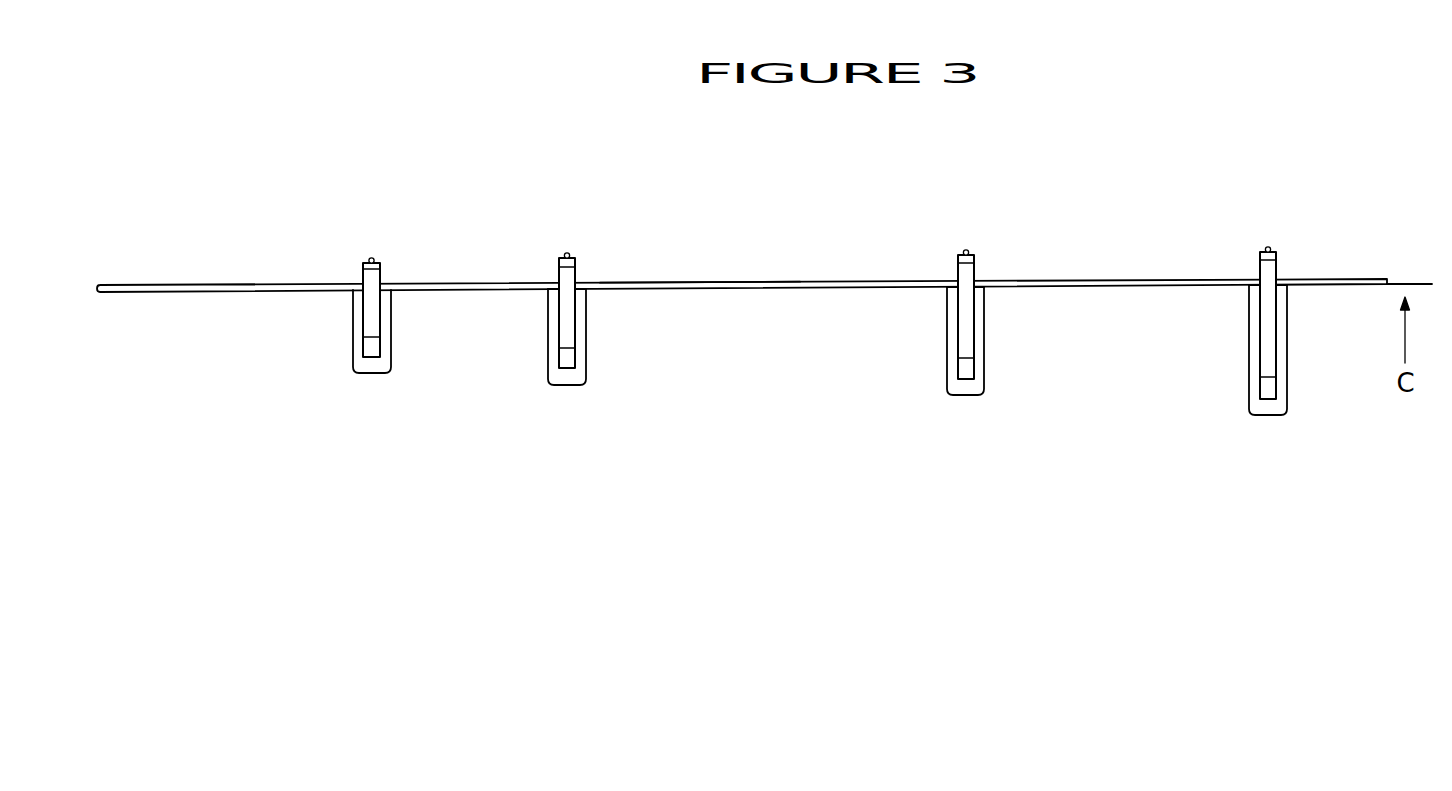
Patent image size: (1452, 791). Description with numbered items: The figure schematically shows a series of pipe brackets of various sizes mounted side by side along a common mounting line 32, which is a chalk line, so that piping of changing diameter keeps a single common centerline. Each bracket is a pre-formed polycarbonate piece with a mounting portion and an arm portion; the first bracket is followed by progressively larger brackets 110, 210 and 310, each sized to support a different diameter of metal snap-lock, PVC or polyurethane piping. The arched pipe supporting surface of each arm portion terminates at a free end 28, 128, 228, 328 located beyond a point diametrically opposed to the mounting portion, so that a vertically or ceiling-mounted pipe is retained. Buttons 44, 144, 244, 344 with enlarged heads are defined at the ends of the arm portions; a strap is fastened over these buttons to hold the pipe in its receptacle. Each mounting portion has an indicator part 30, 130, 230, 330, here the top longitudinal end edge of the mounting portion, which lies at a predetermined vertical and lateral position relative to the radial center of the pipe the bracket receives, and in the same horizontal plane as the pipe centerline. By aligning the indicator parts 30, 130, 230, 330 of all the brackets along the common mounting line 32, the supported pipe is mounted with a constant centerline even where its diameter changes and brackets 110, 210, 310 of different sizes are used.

The indicator part 30 is at (352, 285).
The common mounting line 32 is at (719, 260).
The free end 28 is at (382, 277).
The button 44 is at (370, 257).
The pipe bracket 110 is at (404, 380).
The free end 128 is at (577, 275).
The button 144 is at (565, 256).
The indicator part 130 is at (556, 292).
The pipe bracket 210 is at (996, 404).
The free end 228 is at (976, 273).
The button 244 is at (964, 253).
The indicator part 230 is at (955, 291).
The pipe bracket 310 is at (1298, 422).
The free end 328 is at (1279, 268).
The button 344 is at (1266, 250).
The indicator part 330 is at (1257, 289).